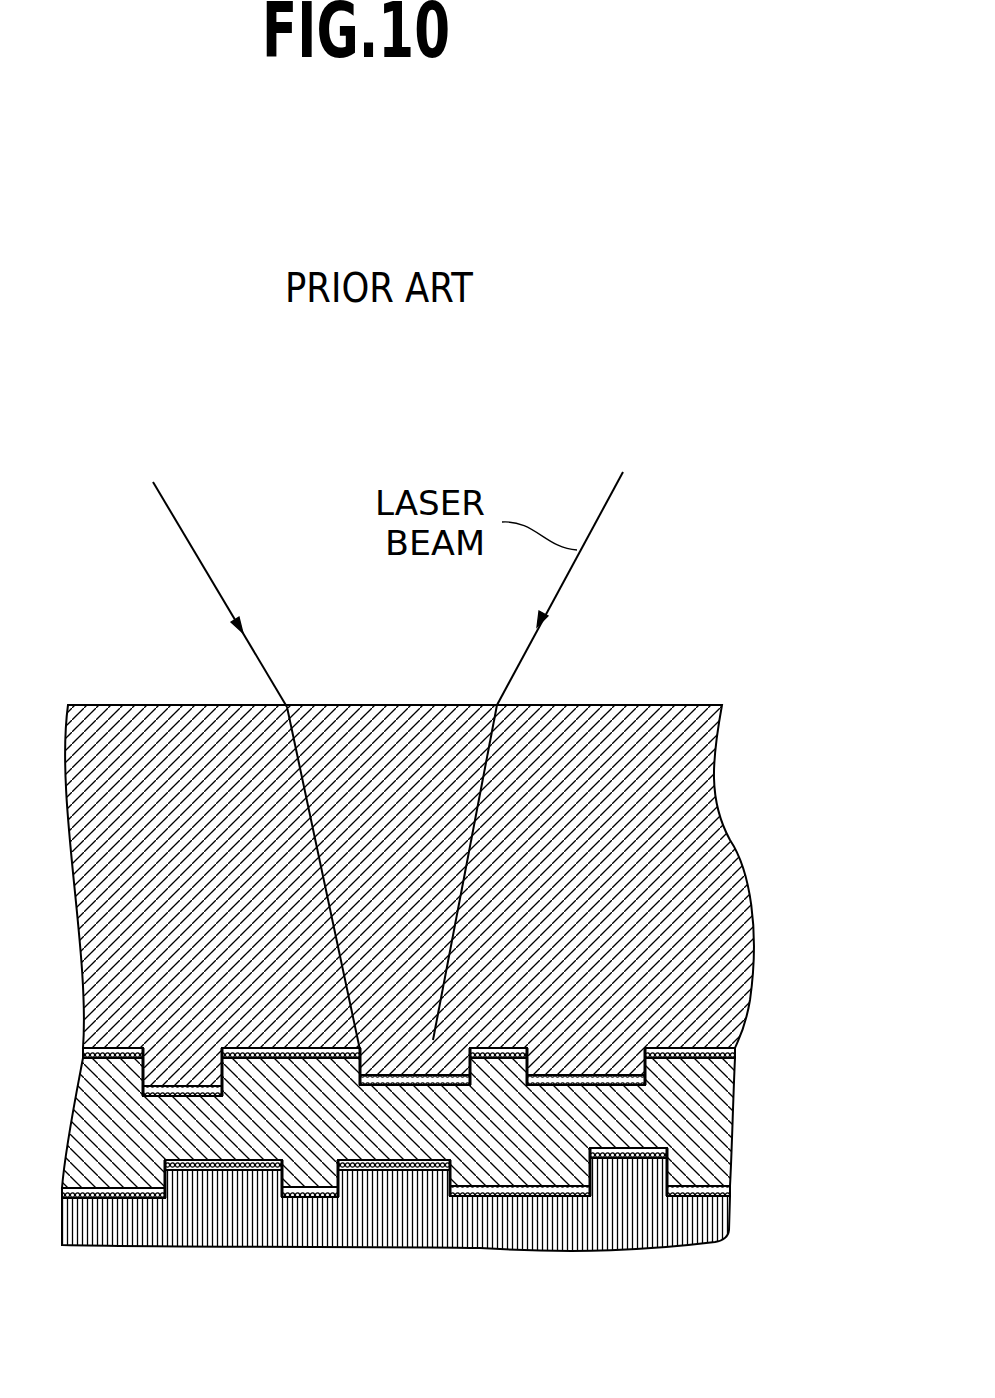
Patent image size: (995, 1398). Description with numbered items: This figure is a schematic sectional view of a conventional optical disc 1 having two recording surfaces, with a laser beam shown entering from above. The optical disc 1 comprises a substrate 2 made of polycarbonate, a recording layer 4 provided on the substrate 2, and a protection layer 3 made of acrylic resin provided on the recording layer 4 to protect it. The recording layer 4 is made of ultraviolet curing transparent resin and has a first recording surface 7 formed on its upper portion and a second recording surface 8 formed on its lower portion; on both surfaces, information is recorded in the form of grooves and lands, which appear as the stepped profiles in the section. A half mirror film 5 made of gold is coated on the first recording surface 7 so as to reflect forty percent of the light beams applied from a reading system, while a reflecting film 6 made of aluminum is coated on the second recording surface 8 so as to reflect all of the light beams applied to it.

The optical disc 1 is at (653, 647).
The substrate 2 is at (692, 812).
The protection layer 3 is at (697, 1222).
The recording layer 4 is at (695, 1112).
The half mirror film 5 is at (705, 1037).
The reflecting film 6 is at (520, 1192).
The first recording surface 7 is at (540, 1062).
The second recording surface 8 is at (690, 1182).